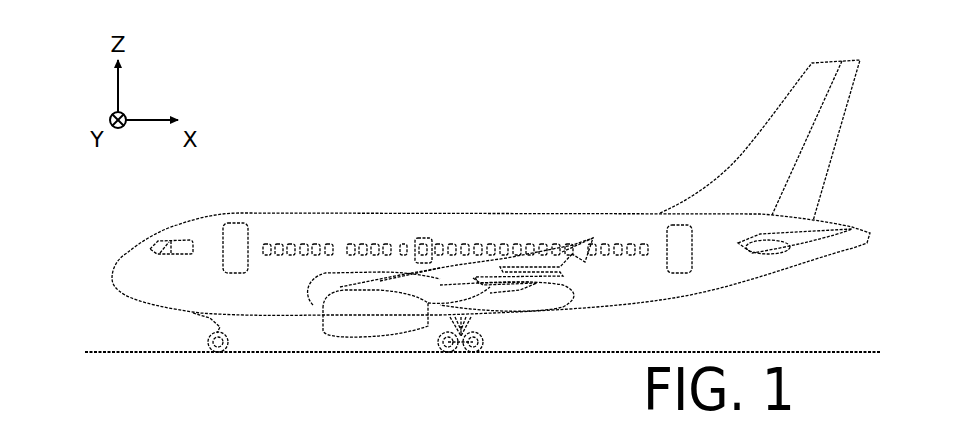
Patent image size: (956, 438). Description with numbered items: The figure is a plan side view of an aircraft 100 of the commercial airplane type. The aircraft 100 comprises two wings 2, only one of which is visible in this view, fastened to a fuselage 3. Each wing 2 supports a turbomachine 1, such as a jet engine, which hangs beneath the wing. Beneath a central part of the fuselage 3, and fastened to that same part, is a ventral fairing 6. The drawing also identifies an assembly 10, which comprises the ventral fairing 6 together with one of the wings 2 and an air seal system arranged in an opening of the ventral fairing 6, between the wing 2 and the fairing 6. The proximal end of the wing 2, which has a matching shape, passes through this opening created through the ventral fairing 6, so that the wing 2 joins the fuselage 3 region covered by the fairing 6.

The aircraft 100 is at (628, 129).
The fuselage 3 is at (291, 236).
The assembly 10 is at (359, 276).
The wing 2 is at (468, 270).
The turbomachine 1 is at (350, 323).
The ventral fairing 6 is at (522, 307).